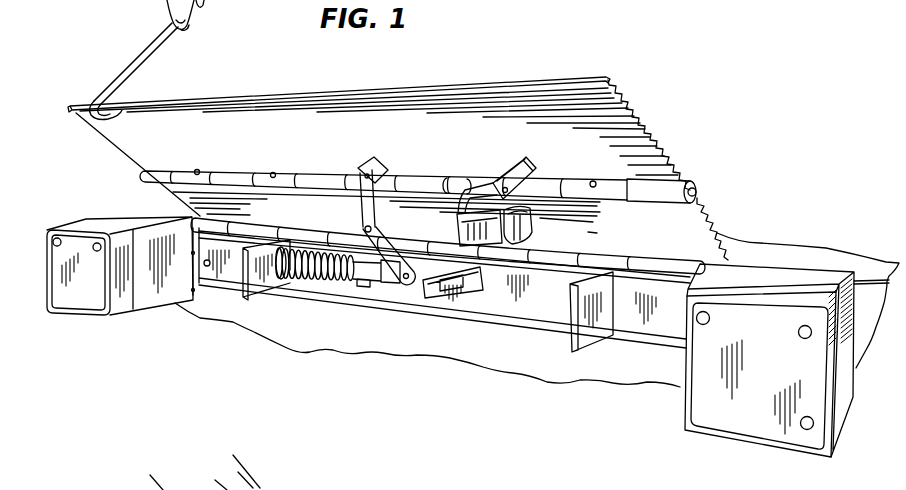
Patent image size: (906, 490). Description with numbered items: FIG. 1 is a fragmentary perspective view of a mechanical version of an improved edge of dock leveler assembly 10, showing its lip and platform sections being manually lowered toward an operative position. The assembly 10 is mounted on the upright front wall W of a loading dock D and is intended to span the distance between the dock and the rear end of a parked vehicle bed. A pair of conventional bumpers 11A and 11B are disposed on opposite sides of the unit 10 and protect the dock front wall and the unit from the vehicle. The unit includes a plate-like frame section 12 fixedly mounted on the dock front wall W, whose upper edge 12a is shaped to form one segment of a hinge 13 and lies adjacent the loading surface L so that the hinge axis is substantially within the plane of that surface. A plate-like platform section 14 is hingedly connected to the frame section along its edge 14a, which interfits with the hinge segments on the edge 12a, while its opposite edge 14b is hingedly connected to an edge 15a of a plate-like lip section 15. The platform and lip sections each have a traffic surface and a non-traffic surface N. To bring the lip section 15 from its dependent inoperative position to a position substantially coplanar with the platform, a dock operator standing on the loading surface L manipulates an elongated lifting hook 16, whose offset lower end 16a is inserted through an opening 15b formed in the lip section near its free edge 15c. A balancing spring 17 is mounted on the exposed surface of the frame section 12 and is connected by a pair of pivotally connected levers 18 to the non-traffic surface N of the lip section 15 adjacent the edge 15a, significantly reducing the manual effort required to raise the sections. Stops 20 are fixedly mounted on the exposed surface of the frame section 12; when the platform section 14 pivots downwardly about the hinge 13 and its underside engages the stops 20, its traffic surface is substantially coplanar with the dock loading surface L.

The dock leveler assembly 10 is at (737, 168).
The bumper 11A is at (73, 297).
The bumper 11B is at (747, 423).
The frame section 12 is at (500, 295).
The upper edge of frame section 12a is at (667, 283).
The hinge 13 is at (698, 266).
The platform section 14 is at (448, 243).
The edge of platform section 14a is at (640, 253).
The opposite edge of platform section 14b is at (613, 190).
The lip section 15 is at (613, 140).
The edge of lip section 15a is at (657, 192).
The opening in lip section 15b is at (125, 108).
The free edge of lip section 15c is at (258, 88).
The lifting hook 16 is at (128, 61).
The lower end of lifting hook 16a is at (88, 121).
The balancing spring 17 is at (307, 290).
The levers 18 is at (358, 206).
The stops 20 is at (240, 287).
The non-traffic surface N is at (480, 107).
The loading surface L is at (780, 247).
The loading dock D is at (248, 344).
The front wall of loading dock W is at (487, 353).